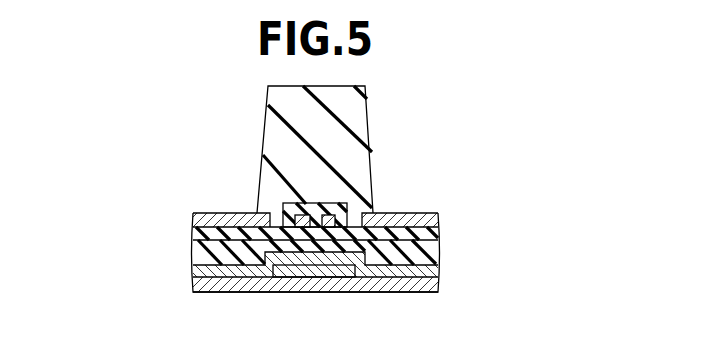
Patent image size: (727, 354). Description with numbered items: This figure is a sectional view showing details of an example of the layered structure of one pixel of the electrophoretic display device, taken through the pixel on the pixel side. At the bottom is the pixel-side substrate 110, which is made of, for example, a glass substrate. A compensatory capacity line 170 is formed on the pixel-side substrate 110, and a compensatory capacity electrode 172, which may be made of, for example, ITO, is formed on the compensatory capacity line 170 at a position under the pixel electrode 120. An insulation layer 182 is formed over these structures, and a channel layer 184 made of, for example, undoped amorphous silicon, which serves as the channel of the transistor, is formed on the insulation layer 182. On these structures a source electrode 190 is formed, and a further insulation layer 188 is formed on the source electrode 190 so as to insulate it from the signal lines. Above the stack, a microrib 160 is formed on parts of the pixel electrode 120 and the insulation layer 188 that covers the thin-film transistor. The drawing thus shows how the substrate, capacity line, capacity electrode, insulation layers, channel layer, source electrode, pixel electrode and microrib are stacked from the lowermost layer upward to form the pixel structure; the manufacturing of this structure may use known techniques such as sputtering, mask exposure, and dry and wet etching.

The pixel-side substrate 110 is at (272, 283).
The pixel electrode 120 is at (395, 213).
The microrib 160 is at (362, 127).
The compensatory capacity line 170 is at (345, 278).
The compensatory capacity electrode 172 is at (432, 268).
The insulation layer 182 is at (432, 253).
The channel layer 184 is at (283, 221).
The insulation layer 188 is at (193, 232).
The source electrode 190 is at (283, 212).